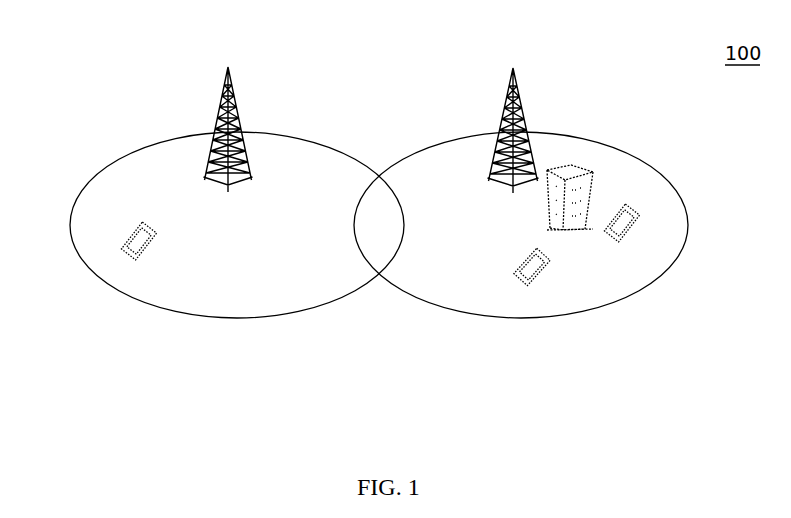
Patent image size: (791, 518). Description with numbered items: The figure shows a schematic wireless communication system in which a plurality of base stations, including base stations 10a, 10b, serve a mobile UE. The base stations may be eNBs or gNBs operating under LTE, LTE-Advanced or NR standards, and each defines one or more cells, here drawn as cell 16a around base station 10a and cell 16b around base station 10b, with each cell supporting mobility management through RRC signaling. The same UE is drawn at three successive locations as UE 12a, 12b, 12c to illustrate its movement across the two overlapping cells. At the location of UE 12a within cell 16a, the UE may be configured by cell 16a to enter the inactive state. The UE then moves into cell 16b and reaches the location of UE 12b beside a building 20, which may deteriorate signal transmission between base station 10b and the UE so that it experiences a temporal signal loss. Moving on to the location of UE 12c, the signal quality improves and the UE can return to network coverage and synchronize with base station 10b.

The base station 10a is at (240, 85).
The base station 10b is at (544, 81).
The UE 12a is at (120, 222).
The UE 12b is at (644, 243).
The UE 12c is at (550, 283).
The cell 16a is at (268, 286).
The cell 16b is at (470, 286).
The building 20 is at (600, 175).